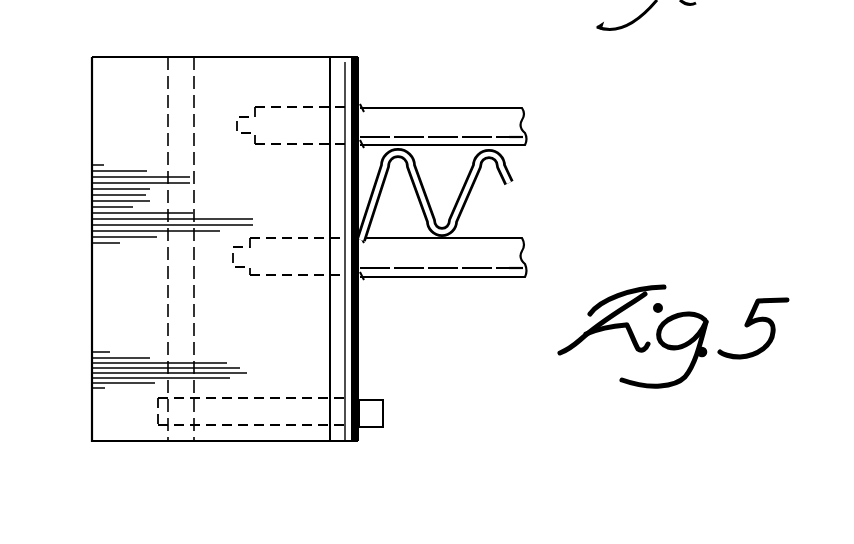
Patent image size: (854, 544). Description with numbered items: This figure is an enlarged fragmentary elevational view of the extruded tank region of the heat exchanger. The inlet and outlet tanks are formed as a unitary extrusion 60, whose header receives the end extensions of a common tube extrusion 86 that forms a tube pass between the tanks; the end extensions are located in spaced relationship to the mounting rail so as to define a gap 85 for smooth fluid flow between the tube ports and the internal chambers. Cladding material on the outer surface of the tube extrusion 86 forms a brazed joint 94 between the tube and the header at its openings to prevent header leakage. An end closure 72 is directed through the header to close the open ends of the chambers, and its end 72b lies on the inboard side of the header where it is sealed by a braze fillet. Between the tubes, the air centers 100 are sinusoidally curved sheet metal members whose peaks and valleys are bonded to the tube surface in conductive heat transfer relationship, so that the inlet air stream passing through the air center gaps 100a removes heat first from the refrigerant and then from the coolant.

The unitary extrusion 60 is at (149, 60).
The end closure 72 is at (288, 403).
The end of end closure 72b is at (383, 412).
The gap 85 is at (213, 117).
The tube extrusion 86 is at (407, 107).
The brazed joint 94 is at (361, 106).
The air center 100 is at (513, 177).
The air center gap 100a is at (438, 167).